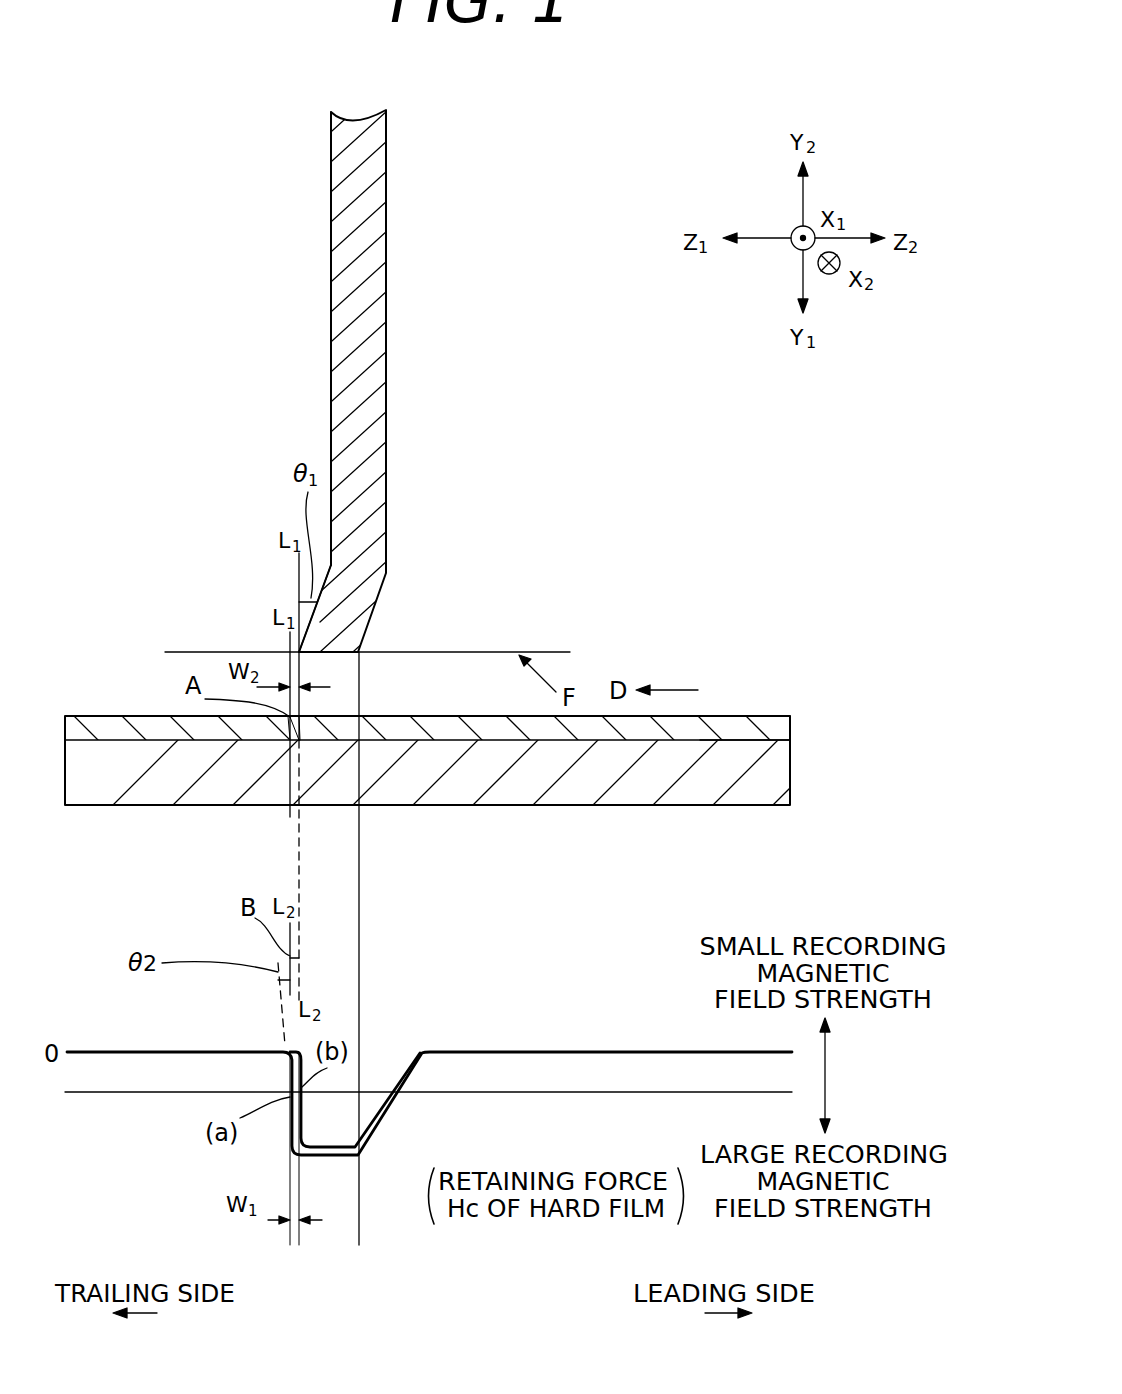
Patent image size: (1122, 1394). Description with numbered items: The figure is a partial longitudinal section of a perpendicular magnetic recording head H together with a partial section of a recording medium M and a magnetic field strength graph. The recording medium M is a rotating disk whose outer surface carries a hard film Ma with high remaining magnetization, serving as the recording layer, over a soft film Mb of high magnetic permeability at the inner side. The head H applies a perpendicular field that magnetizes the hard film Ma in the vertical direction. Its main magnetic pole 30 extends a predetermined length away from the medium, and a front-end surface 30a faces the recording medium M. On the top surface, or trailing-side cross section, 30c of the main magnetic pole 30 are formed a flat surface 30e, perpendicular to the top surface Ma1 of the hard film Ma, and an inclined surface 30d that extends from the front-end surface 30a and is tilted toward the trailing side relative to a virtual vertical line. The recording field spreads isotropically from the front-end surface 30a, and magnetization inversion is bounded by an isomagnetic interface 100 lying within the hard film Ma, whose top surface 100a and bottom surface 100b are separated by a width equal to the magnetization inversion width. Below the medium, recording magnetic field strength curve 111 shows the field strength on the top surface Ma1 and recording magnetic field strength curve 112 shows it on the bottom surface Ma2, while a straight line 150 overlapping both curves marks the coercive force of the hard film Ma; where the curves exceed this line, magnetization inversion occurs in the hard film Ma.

The main magnetic pole 30 is at (380, 152).
The top surface (trailing-side cross section) of main magnetic pole 30c is at (333, 178).
The flat surface 30e is at (331, 421).
The inclined surface 30d is at (325, 600).
The front-end surface 30a is at (338, 654).
The isomagnetic interface 100 is at (290, 723).
The top surface of isomagnetic interface 100a is at (290, 728).
The bottom surface of isomagnetic interface 100b is at (295, 740).
The recording magnetic field strength curve 111 is at (395, 1115).
The recording magnetic field strength curve 112 is at (398, 1080).
The straight line 150 is at (493, 1093).
The perpendicular magnetic recording head H is at (582, 214).
The recording medium M is at (459, 756).
The hard film Ma is at (750, 733).
The top surface of hard film Ma1 is at (763, 714).
The bottom surface of hard film Ma2 is at (726, 738).
The soft film Mb is at (695, 795).